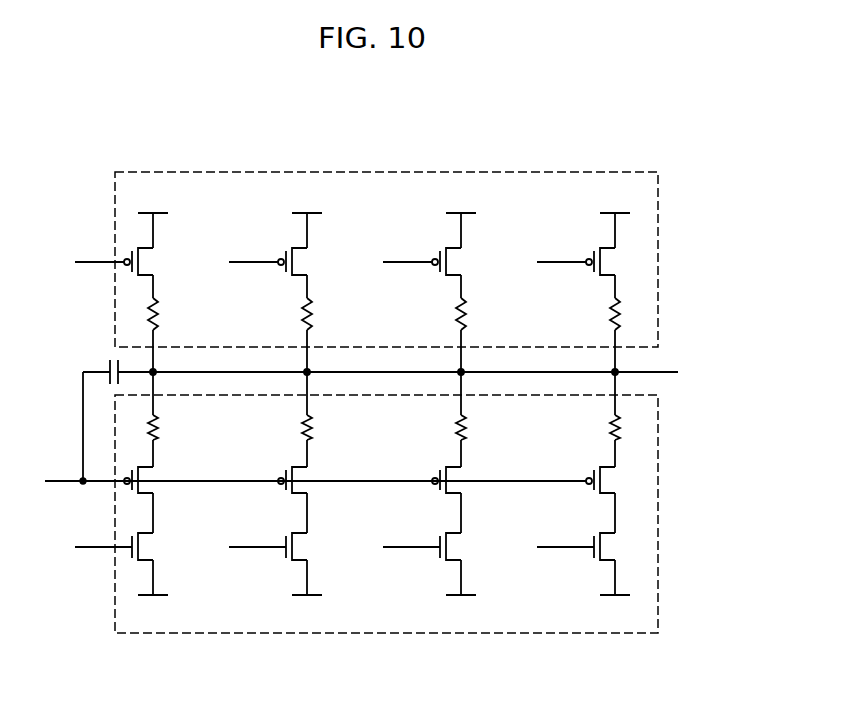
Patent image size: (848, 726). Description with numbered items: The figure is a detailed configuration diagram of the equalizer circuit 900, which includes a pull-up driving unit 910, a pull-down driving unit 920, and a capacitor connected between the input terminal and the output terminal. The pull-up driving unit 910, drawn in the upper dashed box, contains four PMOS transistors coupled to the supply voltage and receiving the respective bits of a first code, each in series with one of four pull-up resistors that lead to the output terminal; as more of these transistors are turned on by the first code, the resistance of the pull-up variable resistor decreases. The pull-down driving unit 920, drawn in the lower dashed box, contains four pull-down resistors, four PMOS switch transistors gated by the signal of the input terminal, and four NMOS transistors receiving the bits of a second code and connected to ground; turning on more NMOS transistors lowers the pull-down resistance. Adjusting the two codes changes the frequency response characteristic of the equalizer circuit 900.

The equalizer circuit 900 is at (710, 595).
The pull-up driving unit 910 is at (660, 258).
The pull-down driving unit 920 is at (660, 512).